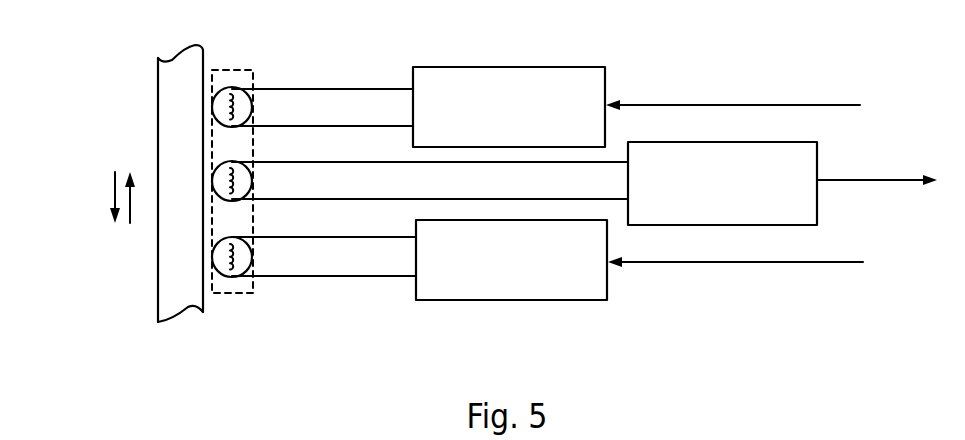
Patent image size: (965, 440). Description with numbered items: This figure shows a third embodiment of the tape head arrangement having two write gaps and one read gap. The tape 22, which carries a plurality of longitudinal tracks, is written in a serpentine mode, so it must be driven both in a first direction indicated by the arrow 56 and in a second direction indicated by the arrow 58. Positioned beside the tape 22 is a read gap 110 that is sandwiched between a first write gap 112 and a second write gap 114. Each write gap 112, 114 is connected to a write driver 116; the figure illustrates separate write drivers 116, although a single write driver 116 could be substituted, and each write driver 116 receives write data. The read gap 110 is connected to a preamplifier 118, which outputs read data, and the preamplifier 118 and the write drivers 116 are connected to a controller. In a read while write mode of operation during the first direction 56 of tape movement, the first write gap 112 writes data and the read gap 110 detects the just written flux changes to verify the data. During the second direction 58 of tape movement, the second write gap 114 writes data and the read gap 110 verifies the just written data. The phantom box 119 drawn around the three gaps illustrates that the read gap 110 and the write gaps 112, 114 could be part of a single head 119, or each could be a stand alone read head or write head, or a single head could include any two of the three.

The tape 22 is at (183, 58).
The arrow indicating first direction 56 is at (113, 196).
The arrow indicating second direction 58 is at (131, 203).
The read gap 110 is at (240, 183).
The first write gap 112 is at (242, 95).
The second write gap 114 is at (243, 262).
The write driver 116 is at (515, 72).
The preamplifier 118 is at (797, 157).
The single head 119 is at (231, 290).